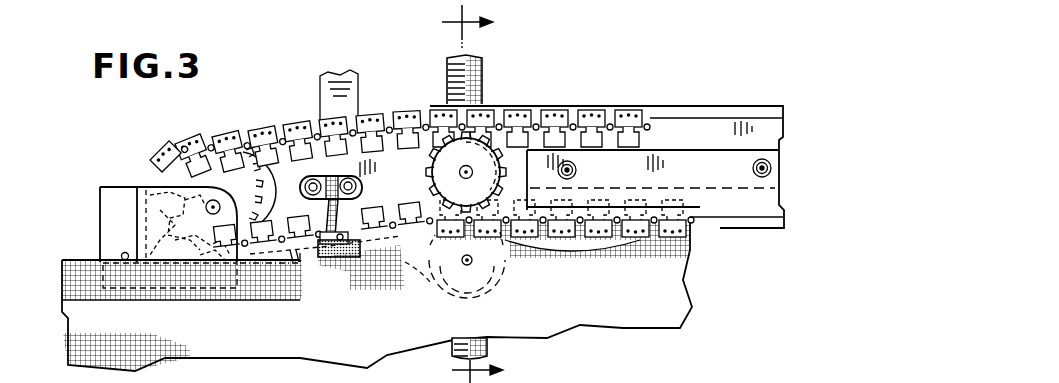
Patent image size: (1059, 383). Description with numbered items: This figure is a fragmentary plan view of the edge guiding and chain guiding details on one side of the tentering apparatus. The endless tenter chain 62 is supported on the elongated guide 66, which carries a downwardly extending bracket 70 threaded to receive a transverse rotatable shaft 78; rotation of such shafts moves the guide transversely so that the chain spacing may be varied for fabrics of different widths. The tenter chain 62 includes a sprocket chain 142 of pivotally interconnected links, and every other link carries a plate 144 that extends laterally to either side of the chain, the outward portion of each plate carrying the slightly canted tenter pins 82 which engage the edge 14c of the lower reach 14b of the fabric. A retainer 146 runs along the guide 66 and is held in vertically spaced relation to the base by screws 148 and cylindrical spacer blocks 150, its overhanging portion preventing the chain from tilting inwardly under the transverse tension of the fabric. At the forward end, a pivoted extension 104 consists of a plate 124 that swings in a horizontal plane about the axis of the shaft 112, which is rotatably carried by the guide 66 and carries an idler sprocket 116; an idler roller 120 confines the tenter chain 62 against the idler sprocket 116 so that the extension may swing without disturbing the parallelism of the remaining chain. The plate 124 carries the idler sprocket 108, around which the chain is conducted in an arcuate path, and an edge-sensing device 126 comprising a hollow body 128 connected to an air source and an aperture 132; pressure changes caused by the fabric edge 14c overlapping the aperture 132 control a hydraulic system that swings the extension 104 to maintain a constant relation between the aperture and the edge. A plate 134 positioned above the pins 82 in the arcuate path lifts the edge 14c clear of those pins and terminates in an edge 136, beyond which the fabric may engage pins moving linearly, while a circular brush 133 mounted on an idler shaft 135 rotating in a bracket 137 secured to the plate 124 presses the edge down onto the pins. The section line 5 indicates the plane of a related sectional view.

The section line 5- 5 is at (460, 194).
The lower reach of the fabric 14b is at (82, 328).
The edge of the fabric 14c is at (139, 258).
The tenter chain 62 is at (560, 103).
The guide 66 is at (726, 130).
The bracket 70 is at (427, 279).
The rotatable shaft 78 is at (484, 70).
The tenter pins 82 is at (318, 253).
The pivoted extension 104 is at (285, 172).
The idler sprocket 108 is at (237, 200).
The shaft 112 is at (462, 174).
The idler sprocket 116 is at (425, 160).
The idler roller 120 is at (510, 278).
The plate 124 is at (355, 170).
The edge-sensing device 126 is at (116, 205).
The hollow body 128 is at (117, 222).
The aperture 132 is at (118, 253).
The circular brush 133 is at (335, 257).
The plate 134 is at (200, 186).
The idler shaft 135 is at (338, 213).
The edge 136 is at (250, 205).
The bracket 137 is at (330, 173).
The sprocket chain 142 is at (328, 225).
The plate 144 is at (633, 138).
The retainer 146 is at (692, 167).
The screws 148 is at (577, 170).
The cylindrical spacer blocks 150 is at (573, 160).